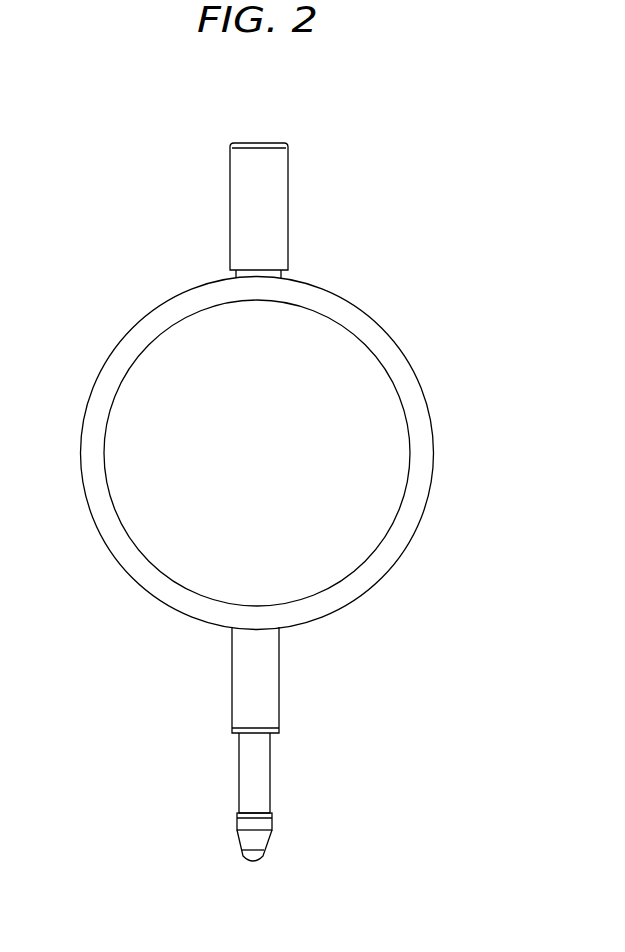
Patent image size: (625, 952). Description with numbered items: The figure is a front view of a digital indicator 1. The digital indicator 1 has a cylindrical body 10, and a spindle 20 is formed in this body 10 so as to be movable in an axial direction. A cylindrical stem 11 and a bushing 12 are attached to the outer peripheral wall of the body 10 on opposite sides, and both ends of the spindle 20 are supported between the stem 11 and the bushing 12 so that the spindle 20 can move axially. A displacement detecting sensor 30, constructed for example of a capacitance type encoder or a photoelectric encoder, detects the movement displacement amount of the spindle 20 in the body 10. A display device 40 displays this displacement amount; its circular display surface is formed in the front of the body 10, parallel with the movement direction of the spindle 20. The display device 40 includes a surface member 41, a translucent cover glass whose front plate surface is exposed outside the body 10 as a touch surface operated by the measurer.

The digital indicator 1 is at (450, 196).
The body 10 is at (114, 347).
The stem 11 is at (232, 657).
The bushing 12 is at (250, 264).
The spindle 20 is at (270, 773).
The displacement detecting sensor 30 is at (358, 543).
The display device 40 is at (353, 348).
The surface member 41 is at (390, 433).